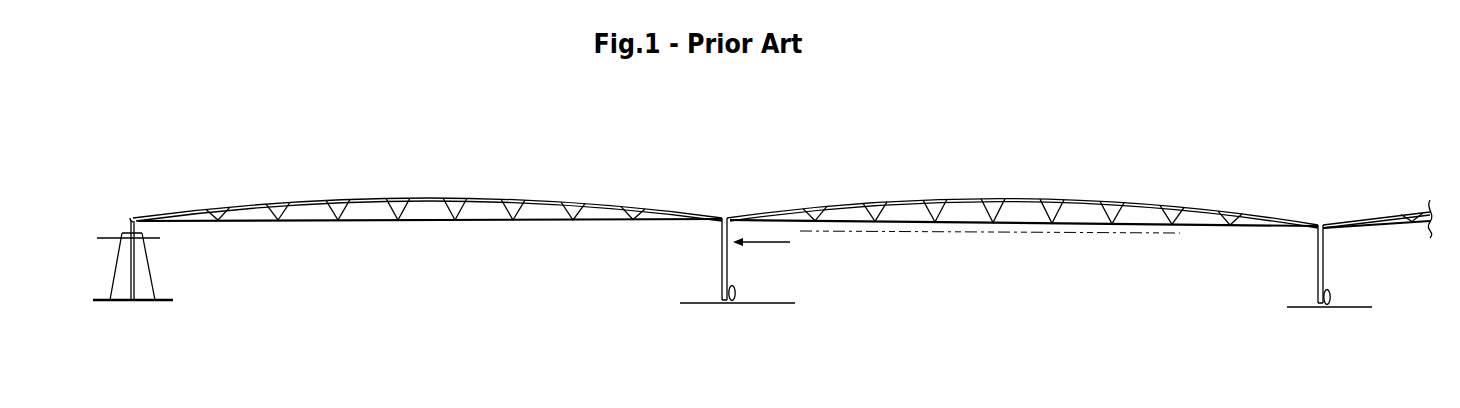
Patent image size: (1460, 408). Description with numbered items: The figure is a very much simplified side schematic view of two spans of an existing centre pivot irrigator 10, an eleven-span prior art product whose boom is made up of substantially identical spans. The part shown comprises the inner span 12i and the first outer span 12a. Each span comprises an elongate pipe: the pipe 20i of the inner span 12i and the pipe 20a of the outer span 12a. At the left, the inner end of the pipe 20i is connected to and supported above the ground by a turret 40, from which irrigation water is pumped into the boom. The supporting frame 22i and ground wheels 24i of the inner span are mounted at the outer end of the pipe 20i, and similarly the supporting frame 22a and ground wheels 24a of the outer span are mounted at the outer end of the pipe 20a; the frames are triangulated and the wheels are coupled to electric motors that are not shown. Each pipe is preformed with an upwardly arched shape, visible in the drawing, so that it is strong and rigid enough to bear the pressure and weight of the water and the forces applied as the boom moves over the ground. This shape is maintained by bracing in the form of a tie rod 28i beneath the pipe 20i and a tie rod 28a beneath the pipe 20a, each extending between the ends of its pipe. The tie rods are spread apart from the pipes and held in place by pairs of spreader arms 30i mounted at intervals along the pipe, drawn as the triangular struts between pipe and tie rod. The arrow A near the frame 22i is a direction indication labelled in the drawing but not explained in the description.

The centre pivot irrigator 10 is at (711, 193).
The inner span 12i is at (385, 190).
The outer span 12a is at (1092, 192).
The pipe 20i is at (488, 200).
The pipe 20a is at (991, 199).
The supporting frame 22i is at (722, 248).
The supporting frame 22a is at (1316, 247).
The ground wheels 24i is at (737, 293).
The ground wheels 24a is at (1333, 297).
The tie rod 28i is at (320, 222).
The tie rod 28a is at (1010, 226).
The spreader arms 30i is at (504, 211).
The turret 40 is at (142, 267).
The direction arrow A is at (761, 259).